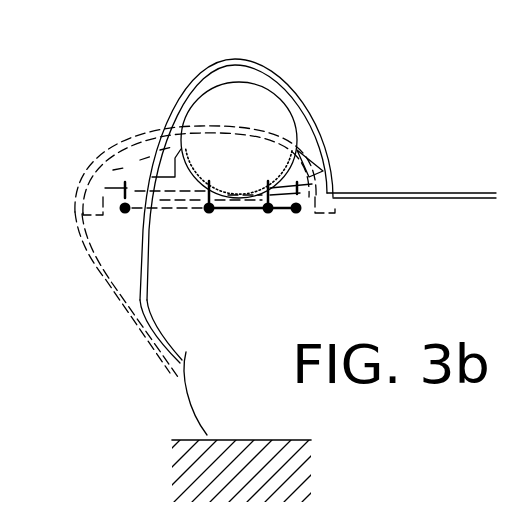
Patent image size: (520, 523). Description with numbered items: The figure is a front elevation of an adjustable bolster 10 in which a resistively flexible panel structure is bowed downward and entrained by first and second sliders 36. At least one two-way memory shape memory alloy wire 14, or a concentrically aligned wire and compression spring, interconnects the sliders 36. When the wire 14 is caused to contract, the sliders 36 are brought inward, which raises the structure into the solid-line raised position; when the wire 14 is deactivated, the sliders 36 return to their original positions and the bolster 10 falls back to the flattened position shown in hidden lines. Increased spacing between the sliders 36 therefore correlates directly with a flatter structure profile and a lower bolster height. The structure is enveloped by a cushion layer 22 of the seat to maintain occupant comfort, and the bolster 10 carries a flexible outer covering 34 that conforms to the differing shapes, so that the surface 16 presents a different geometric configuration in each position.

The bolster 10 is at (160, 69).
The two-way memory SMA wire 14 is at (243, 207).
The surface 16 is at (450, 193).
The cushion layer 22 is at (293, 110).
The flexible outer covering 34 is at (287, 81).
The sliders 36 is at (278, 205).